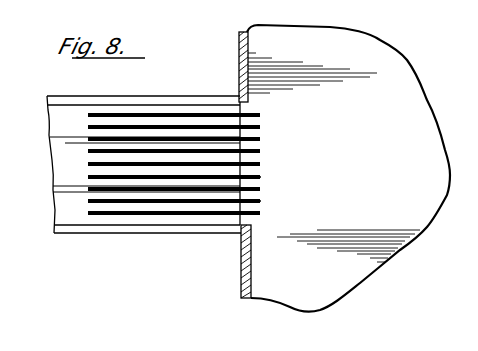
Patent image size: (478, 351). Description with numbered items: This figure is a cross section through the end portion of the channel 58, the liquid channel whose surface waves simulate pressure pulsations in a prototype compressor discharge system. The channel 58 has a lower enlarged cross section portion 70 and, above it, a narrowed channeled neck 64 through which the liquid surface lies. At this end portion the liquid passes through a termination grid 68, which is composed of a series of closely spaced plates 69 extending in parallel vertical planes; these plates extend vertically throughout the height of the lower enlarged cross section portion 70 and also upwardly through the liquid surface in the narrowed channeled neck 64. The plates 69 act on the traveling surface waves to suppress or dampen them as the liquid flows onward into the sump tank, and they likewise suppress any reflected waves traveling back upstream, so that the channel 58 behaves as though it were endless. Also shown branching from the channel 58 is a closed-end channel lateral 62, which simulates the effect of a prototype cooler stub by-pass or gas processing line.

The channel 58 is at (171, 243).
The channel lateral 62 is at (252, 265).
The narrowed channeled neck 64 is at (65, 144).
The termination grid 68 is at (268, 163).
The plates 69 is at (260, 177).
The lower enlarged cross section portion 70 is at (91, 223).